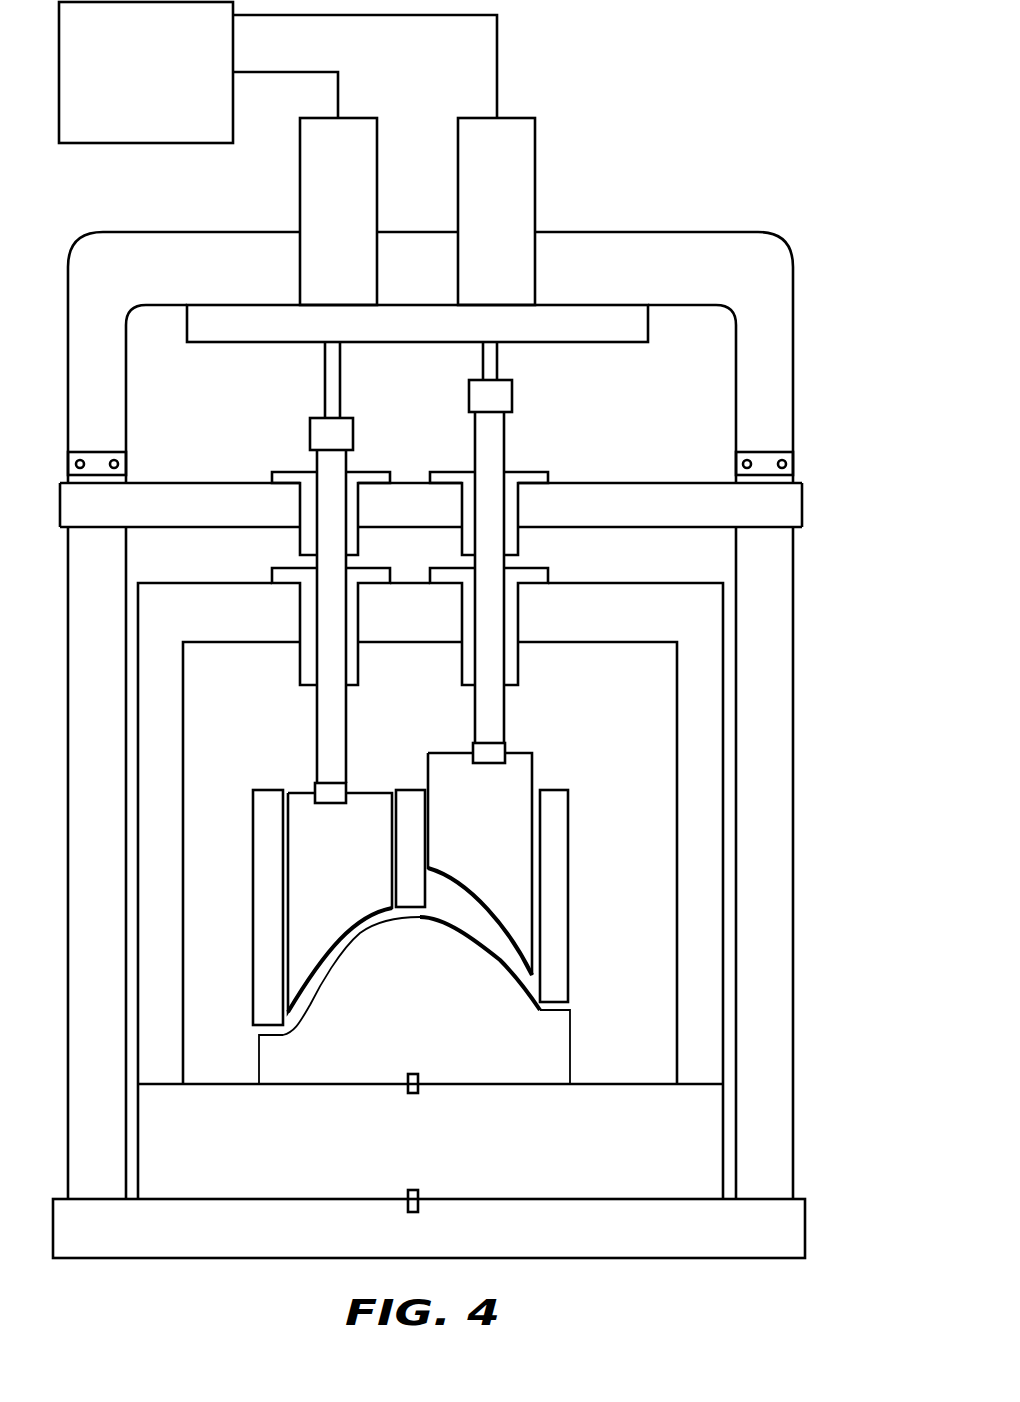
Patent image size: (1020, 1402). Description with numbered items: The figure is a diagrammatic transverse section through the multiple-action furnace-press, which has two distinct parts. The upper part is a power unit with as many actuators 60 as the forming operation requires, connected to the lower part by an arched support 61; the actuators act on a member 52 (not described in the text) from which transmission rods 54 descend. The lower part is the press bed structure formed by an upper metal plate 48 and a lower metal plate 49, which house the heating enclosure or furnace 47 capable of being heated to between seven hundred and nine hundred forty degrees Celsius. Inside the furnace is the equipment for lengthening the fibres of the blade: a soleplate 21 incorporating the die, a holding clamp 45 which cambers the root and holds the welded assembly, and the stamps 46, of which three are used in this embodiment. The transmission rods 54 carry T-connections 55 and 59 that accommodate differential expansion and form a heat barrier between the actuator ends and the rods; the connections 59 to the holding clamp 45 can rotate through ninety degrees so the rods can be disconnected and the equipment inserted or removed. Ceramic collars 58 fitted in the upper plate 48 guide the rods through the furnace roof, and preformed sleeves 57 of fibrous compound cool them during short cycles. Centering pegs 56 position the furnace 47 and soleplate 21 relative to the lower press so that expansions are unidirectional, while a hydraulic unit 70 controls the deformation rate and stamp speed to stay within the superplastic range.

The hydraulic unit 70 is at (160, 76).
The actuators 60 is at (522, 176).
The arched support 61 is at (783, 298).
The crosshead plate 52 is at (622, 333).
The T-connection 55 is at (506, 390).
The transmission rods 54 is at (492, 434).
The collars 58 is at (275, 472).
The upper metal plate 48 is at (787, 505).
The preformed sleeves 57 is at (300, 672).
The heating enclosure 47 is at (690, 693).
The T-connection 59 is at (505, 757).
The stamps 46 is at (350, 871).
The holding clamp 45 is at (556, 891).
The soleplate 21 is at (270, 1061).
The centering pegs 56 is at (418, 1092).
The lower metal plate 49 is at (793, 1228).